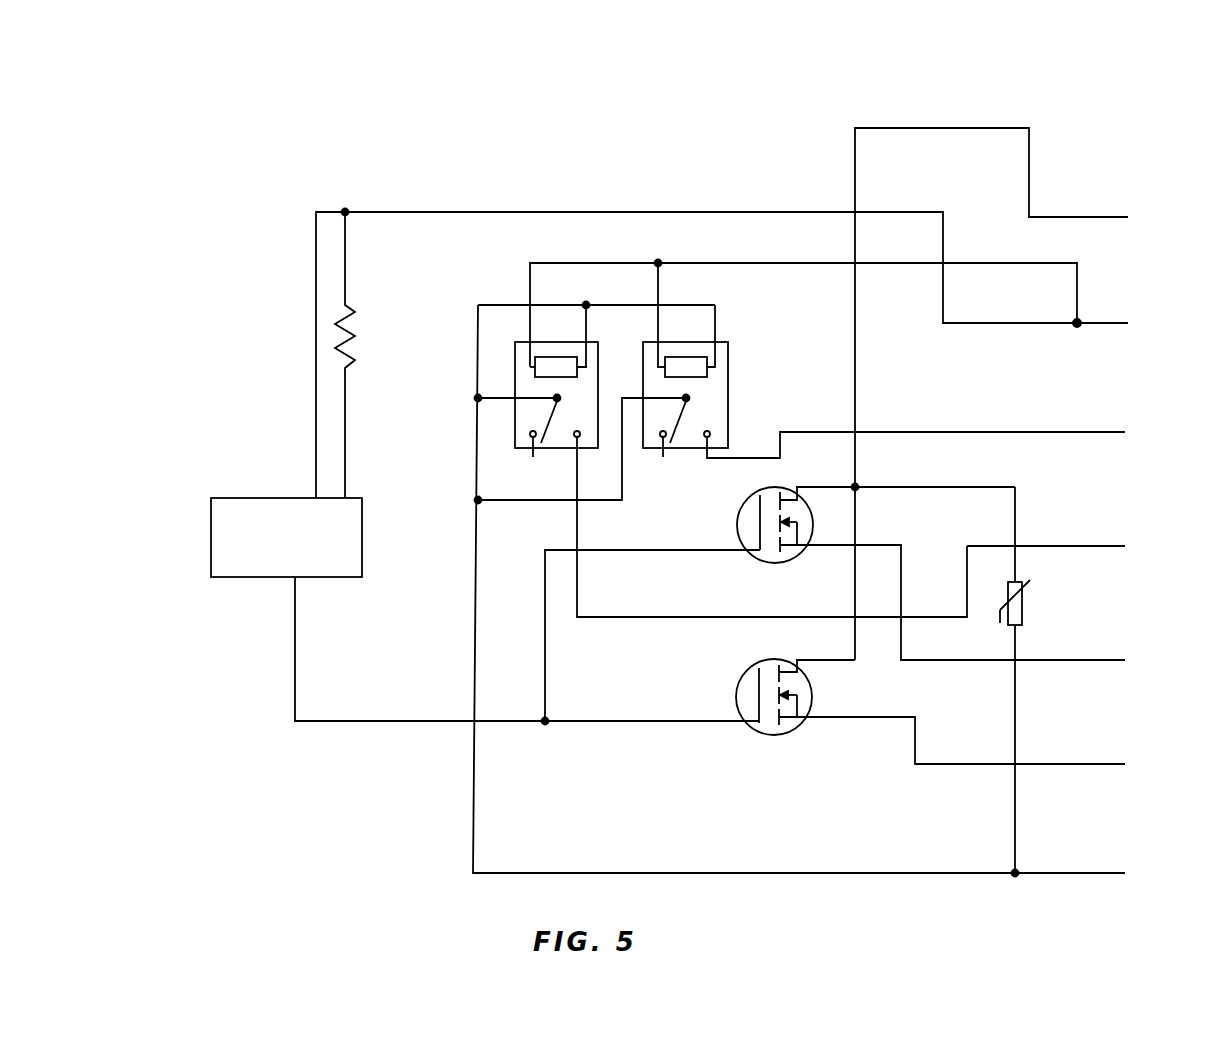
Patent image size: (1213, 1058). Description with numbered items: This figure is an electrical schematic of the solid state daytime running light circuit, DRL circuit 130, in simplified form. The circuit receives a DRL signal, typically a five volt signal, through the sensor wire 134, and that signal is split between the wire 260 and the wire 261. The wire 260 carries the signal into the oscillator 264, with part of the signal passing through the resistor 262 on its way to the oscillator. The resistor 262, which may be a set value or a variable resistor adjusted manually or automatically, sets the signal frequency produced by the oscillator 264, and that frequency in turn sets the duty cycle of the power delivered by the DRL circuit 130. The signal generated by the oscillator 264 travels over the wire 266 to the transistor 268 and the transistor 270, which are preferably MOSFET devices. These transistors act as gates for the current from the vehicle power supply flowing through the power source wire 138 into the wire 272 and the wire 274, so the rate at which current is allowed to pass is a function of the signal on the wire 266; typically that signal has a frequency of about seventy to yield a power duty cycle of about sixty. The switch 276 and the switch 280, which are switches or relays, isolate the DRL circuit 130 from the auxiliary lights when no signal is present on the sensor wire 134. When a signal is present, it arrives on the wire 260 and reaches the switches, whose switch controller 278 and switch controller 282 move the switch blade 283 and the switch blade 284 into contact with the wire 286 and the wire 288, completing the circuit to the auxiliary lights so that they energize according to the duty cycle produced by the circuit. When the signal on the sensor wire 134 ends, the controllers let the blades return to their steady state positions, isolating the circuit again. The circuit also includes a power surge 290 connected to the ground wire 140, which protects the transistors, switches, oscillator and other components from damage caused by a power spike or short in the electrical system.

The DRL circuit 130 is at (521, 178).
The wire 260 is at (615, 212).
The power source wire 138 is at (1070, 217).
The sensor wire 134 is at (1106, 323).
The wire 261 is at (1013, 327).
The wire 288 is at (1066, 432).
The resistor 262 is at (352, 307).
The oscillator 264 is at (242, 498).
The wire 266 is at (402, 721).
The switch 276 is at (515, 380).
The switch controller 278 is at (543, 350).
The switch blade 283 is at (542, 414).
The switch 280 is at (728, 380).
The switch controller 282 is at (690, 358).
The switch blade 284 is at (728, 423).
The transistor 270 is at (747, 500).
The transistor 268 is at (777, 735).
The wire 286 is at (1067, 546).
The power surge 290 is at (1025, 603).
The wire 272 is at (1067, 660).
The wire 274 is at (1063, 764).
The ground wire 140 is at (1062, 873).